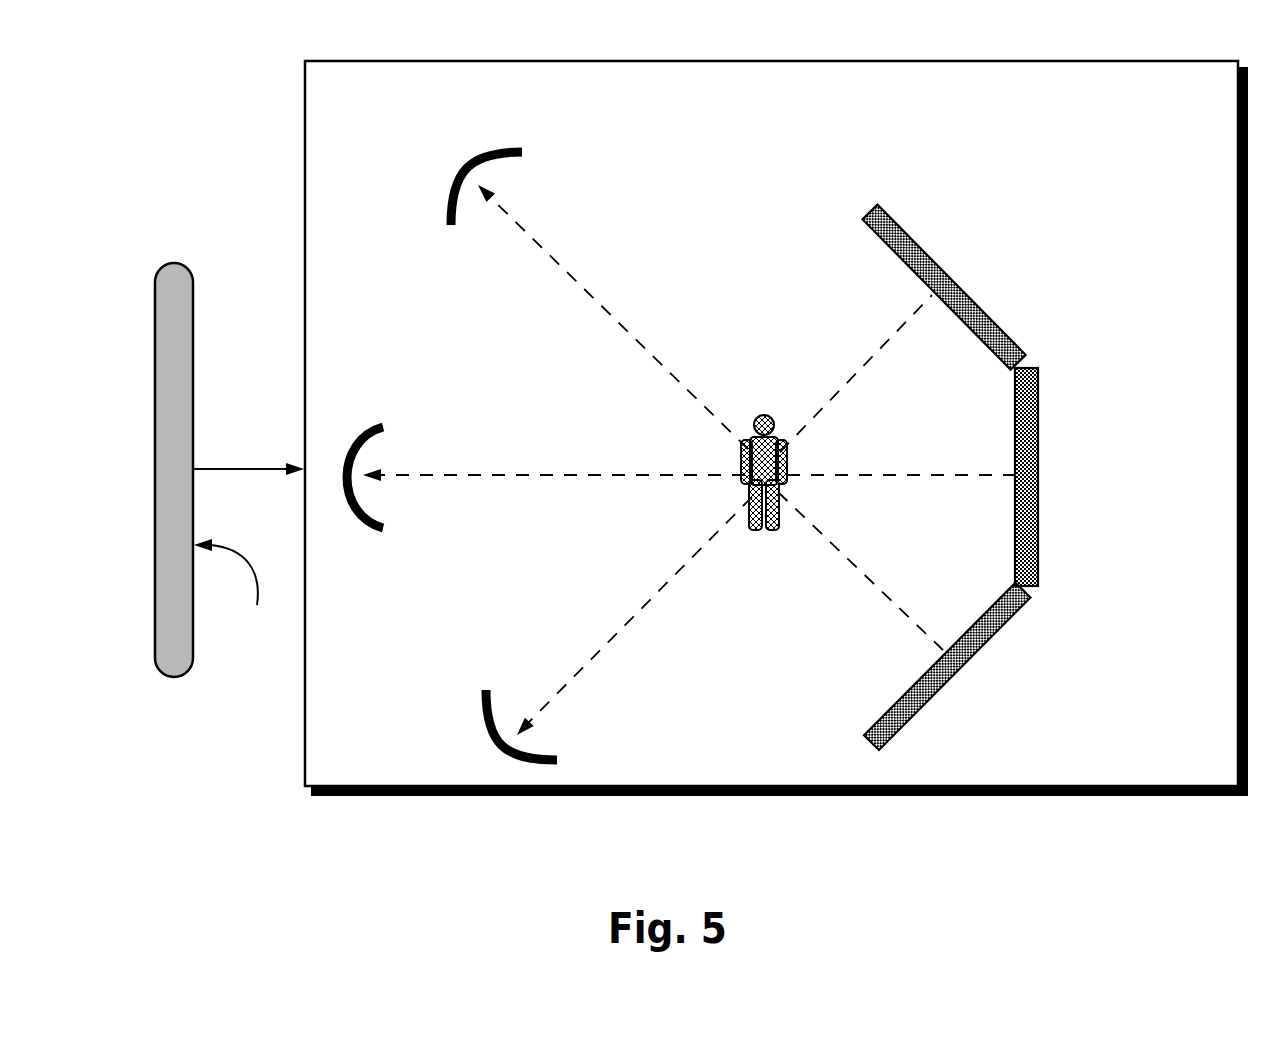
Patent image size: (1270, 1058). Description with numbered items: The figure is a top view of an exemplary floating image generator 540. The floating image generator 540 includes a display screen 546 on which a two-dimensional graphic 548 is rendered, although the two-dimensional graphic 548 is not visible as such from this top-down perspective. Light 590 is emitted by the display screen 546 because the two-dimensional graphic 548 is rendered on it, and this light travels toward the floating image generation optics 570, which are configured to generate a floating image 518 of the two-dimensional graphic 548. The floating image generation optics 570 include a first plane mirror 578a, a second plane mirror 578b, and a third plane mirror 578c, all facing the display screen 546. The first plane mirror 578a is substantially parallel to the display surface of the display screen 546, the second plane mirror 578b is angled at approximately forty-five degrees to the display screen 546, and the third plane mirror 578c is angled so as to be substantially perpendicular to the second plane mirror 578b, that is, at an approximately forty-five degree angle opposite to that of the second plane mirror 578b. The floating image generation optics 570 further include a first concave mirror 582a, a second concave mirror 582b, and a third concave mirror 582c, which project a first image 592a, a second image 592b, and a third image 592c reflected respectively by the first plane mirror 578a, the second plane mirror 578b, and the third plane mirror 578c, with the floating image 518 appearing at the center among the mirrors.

The floating image generator 540 is at (140, 98).
The display screen 546 is at (193, 662).
The 2D graphic 548 is at (230, 589).
The light 590 is at (236, 470).
The floating image generation optics 570 is at (776, 428).
The first concave mirror 582a is at (362, 438).
The second concave mirror 582b is at (455, 160).
The third concave mirror 582c is at (478, 696).
The first image 592a is at (553, 477).
The second image 592b is at (681, 386).
The third image 592c is at (660, 593).
The floating image 518 is at (758, 531).
The first plane mirror 578a is at (1039, 488).
The second plane mirror 578b is at (965, 663).
The third plane mirror 578c is at (970, 288).